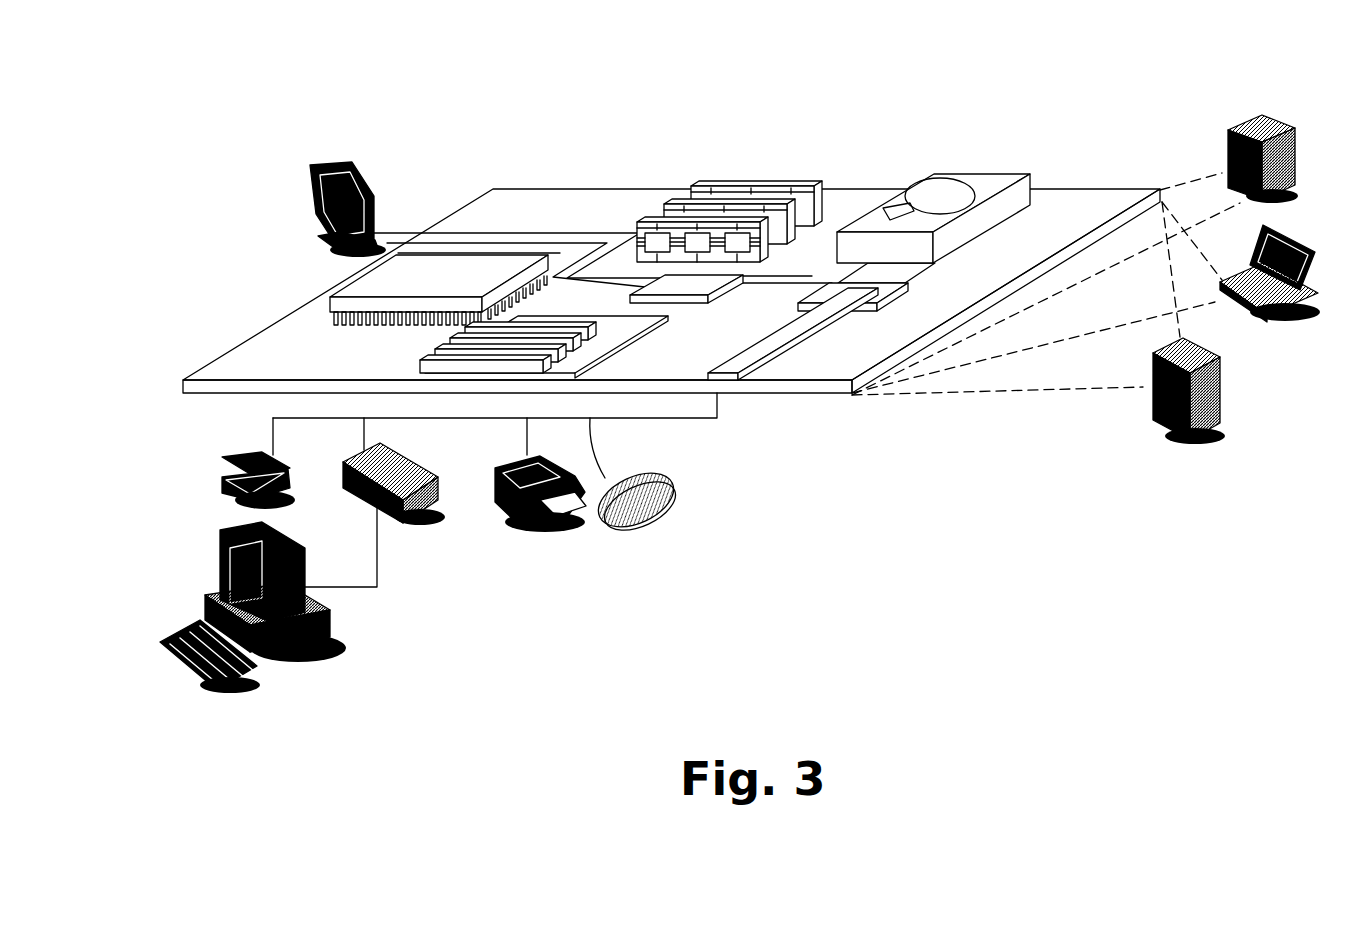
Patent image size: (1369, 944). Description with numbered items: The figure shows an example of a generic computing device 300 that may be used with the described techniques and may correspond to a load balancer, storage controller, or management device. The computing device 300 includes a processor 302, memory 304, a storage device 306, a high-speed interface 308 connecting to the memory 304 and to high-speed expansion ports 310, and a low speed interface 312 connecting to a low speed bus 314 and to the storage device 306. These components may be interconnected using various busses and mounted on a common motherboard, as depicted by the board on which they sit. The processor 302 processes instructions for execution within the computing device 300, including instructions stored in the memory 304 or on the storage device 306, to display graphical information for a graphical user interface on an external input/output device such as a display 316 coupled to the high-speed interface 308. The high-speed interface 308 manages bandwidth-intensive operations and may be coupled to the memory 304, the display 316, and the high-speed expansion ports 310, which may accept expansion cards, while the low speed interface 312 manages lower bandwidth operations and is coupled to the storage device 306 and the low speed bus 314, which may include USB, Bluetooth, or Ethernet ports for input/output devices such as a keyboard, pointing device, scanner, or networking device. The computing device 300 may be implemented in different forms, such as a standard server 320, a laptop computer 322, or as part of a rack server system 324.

The computing device 300 is at (272, 74).
The processor 302 is at (348, 285).
The memory 304 is at (742, 185).
The storage device 306 is at (932, 176).
The high-speed interface 308 is at (696, 302).
The high-speed expansion ports 310 is at (425, 360).
The low speed interface 312 is at (832, 286).
The low speed bus 314 is at (722, 368).
The display 316 is at (318, 164).
The standard server 320 is at (1236, 128).
The laptop computer 322 is at (1290, 305).
The rack server system 324 is at (1222, 390).